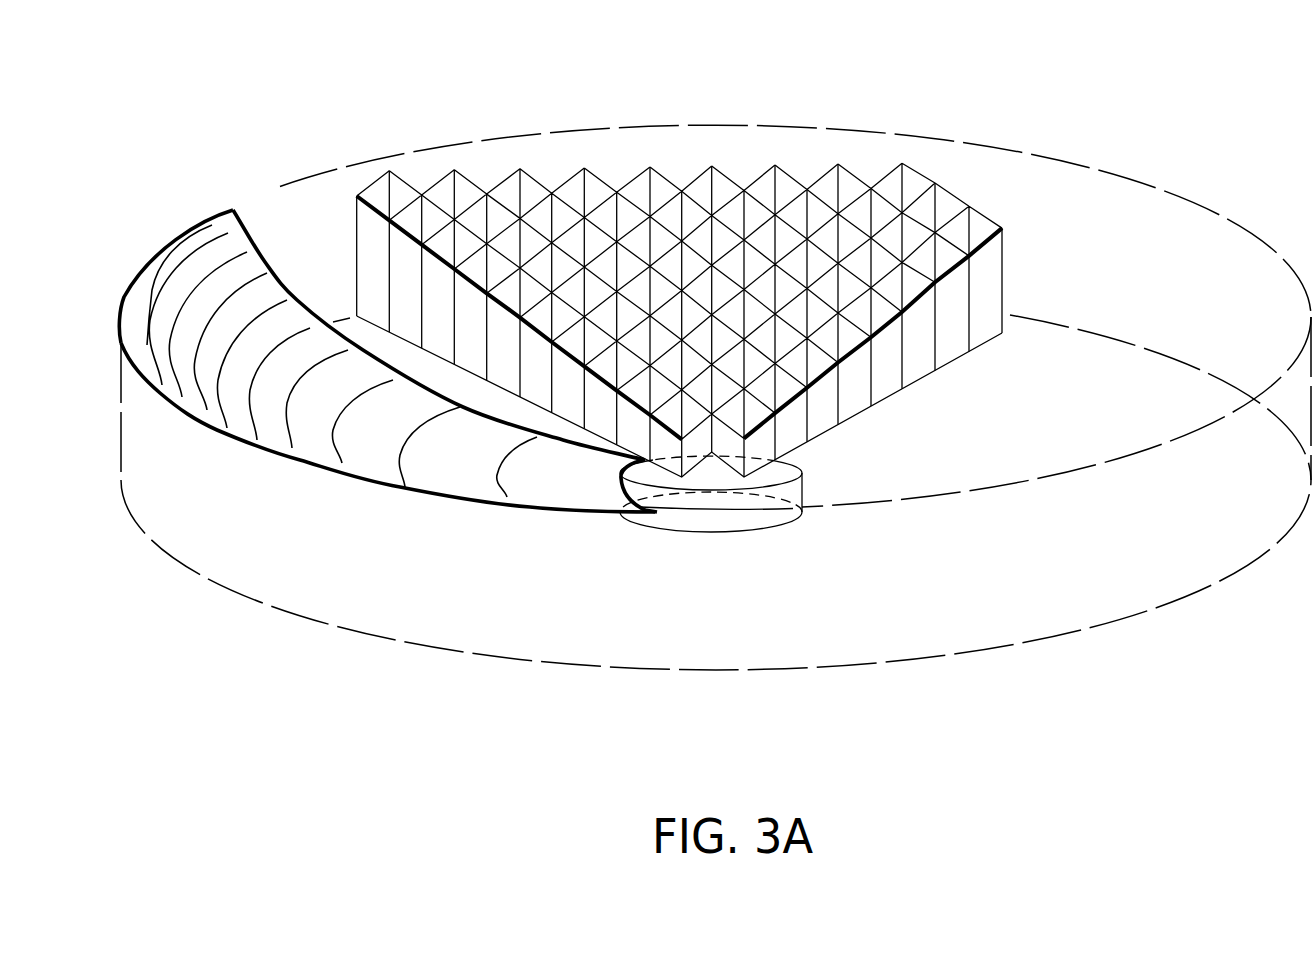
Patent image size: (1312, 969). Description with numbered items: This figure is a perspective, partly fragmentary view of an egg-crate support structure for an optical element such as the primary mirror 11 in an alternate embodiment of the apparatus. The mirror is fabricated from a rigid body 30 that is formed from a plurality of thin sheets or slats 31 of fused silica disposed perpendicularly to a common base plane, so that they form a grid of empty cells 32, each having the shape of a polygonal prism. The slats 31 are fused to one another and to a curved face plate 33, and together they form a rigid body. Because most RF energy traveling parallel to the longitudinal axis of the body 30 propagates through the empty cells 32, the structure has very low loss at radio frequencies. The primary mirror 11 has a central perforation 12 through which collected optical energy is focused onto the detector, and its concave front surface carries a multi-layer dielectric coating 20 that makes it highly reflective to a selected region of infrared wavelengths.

The primary mirror 11 is at (1072, 95).
The central perforation 12 is at (802, 484).
The coating 20 is at (567, 510).
The rigid body 30 is at (170, 243).
The slats 31 is at (787, 168).
The empty cells 32 is at (403, 192).
The curved face plate 33 is at (262, 215).